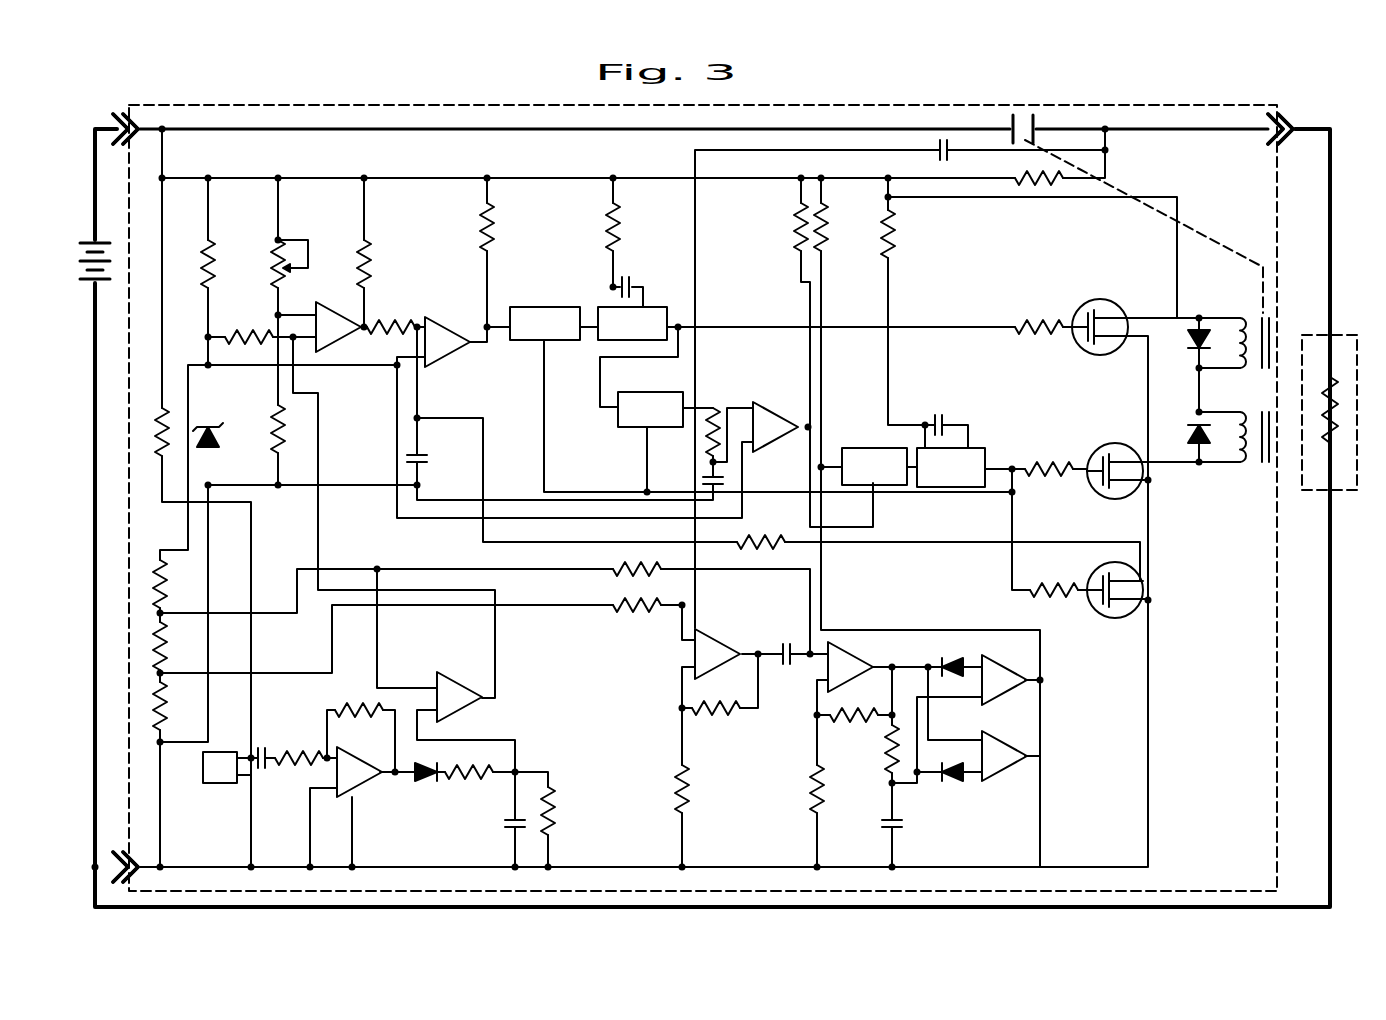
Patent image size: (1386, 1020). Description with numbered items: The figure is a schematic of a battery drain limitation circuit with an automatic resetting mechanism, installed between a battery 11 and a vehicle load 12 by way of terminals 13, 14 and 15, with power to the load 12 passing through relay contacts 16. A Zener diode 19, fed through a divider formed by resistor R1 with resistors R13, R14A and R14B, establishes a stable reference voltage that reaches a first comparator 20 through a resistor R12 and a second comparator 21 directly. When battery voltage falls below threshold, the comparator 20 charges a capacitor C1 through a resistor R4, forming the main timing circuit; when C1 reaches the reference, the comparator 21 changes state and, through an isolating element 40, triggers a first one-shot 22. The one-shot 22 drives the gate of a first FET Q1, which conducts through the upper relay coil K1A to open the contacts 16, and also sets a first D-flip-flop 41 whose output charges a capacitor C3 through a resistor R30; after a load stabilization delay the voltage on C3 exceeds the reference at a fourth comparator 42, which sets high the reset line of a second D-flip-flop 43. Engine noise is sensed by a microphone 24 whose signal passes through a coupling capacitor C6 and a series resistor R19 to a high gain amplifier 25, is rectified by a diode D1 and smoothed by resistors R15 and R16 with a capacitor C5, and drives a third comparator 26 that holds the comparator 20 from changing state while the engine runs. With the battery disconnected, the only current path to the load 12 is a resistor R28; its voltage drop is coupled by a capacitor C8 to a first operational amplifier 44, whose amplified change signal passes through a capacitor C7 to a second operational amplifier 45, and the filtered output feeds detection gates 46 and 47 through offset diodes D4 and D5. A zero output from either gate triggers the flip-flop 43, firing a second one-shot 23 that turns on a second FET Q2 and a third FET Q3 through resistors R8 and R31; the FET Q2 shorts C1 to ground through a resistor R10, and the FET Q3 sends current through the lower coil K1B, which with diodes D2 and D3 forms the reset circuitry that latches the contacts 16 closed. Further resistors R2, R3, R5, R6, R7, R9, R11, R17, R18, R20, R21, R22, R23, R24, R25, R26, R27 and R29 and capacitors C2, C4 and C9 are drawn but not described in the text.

The battery 11 is at (86, 236).
The vehicle load 12 is at (1338, 333).
The terminal 13 is at (1294, 116).
The terminal 14 is at (120, 122).
The terminal 15 is at (114, 876).
The relay contacts 16 is at (1010, 118).
The Zener diode 19 is at (217, 437).
The first comparator 20 is at (340, 302).
The second comparator 21 is at (436, 332).
The first one-shot 22 is at (657, 308).
The second one-shot 23 is at (982, 454).
The microphone 24 is at (220, 785).
The high gain amplifier 25 is at (348, 762).
The third comparator 26 is at (448, 686).
The pulse generator 40 is at (560, 310).
The first D-flip-flop 41 is at (636, 430).
The fourth comparator 42 is at (778, 396).
The second D-flip-flop 43 is at (878, 448).
The first operational amplifier 44 is at (714, 645).
The second operational amplifier 45 is at (850, 668).
The detection gate 46 is at (992, 670).
The detection gate 47 is at (993, 778).
The resistor R1 is at (229, 264).
The potentiometer R2 is at (311, 262).
The resistor R3 is at (293, 429).
The resistor R4 is at (391, 313).
The resistor R5 is at (385, 264).
The resistor R6 is at (468, 227).
The resistor R7 is at (907, 234).
The resistor R8 is at (1054, 578).
The resistor R9 is at (631, 226).
The resistor R10 is at (767, 529).
The resistor R11 is at (1041, 311).
The resistor R12 is at (250, 324).
The resistor R13 is at (184, 584).
The resistor R14A is at (190, 646).
The resistor R14B is at (190, 706).
The resistor R15 is at (472, 759).
The resistor R16 is at (573, 814).
The resistor R17 is at (360, 699).
The resistor R18 is at (142, 433).
The series resistor R19 is at (299, 745).
The resistor R20 is at (637, 618).
The resistor R21 is at (719, 722).
The resistor R22 is at (707, 789).
The resistor R23 is at (859, 703).
The resistor R24 is at (838, 795).
The resistor R25 is at (873, 750).
The resistor R26 is at (637, 581).
The resistor R27 is at (782, 227).
The resistor R28 is at (1039, 198).
The resistor R29 is at (845, 227).
The resistor R30 is at (693, 434).
The resistor R31 is at (1052, 456).
The charging capacitor C1 is at (435, 463).
The capacitor C2 is at (945, 411).
The capacitor C3 is at (696, 480).
The capacitor C4 is at (638, 274).
The capacitor C5 is at (496, 833).
The coupling capacitor C6 is at (272, 774).
The capacitor C7 is at (784, 671).
The capacitor C8 is at (960, 158).
The capacitor C9 is at (909, 831).
The diode D1 is at (423, 787).
The diode D2 is at (1185, 335).
The diode D3 is at (1186, 442).
The offset diode D4 is at (955, 654).
The offset diode D5 is at (955, 787).
The first field effect transistor Q1 is at (1100, 313).
The second field effect transistor Q2 is at (1115, 580).
The third field effect transistor Q3 is at (1115, 458).
The upper relay coil K1A is at (1243, 330).
The lower relay coil K1B is at (1248, 452).